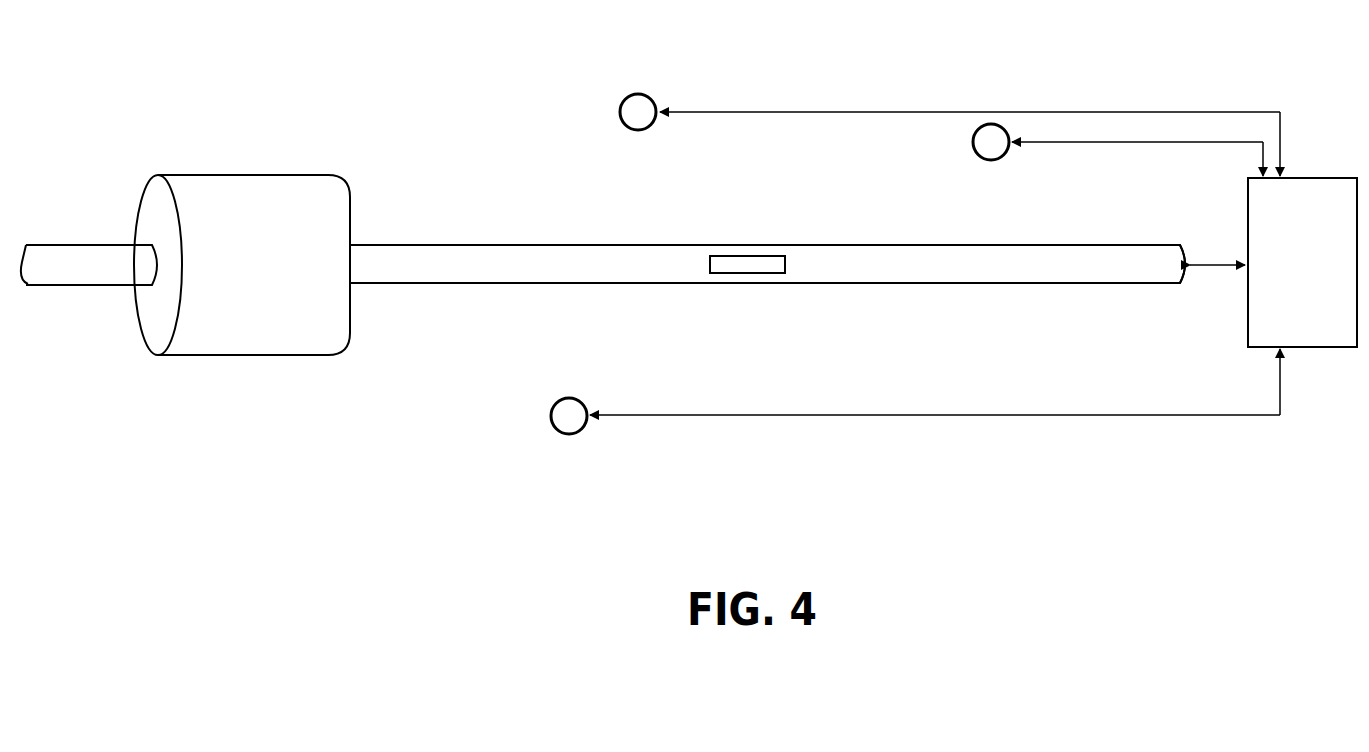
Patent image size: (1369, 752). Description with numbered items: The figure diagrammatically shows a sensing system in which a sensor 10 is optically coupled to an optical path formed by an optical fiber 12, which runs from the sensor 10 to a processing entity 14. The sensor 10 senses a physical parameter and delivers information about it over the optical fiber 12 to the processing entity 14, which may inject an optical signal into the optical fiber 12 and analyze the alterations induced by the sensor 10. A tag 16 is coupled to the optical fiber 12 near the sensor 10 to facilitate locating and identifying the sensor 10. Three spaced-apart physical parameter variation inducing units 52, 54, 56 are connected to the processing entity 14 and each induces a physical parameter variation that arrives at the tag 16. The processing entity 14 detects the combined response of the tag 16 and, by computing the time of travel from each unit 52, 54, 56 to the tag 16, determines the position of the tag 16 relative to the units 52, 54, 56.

The sensor 10 is at (255, 192).
The optical fiber 12 is at (917, 263).
The processing entity 14 is at (1325, 200).
The tag 16 is at (721, 263).
The physical parameter variation inducing unit 52 is at (638, 105).
The physical parameter variation inducing unit 54 is at (993, 152).
The physical parameter variation inducing unit 56 is at (570, 408).